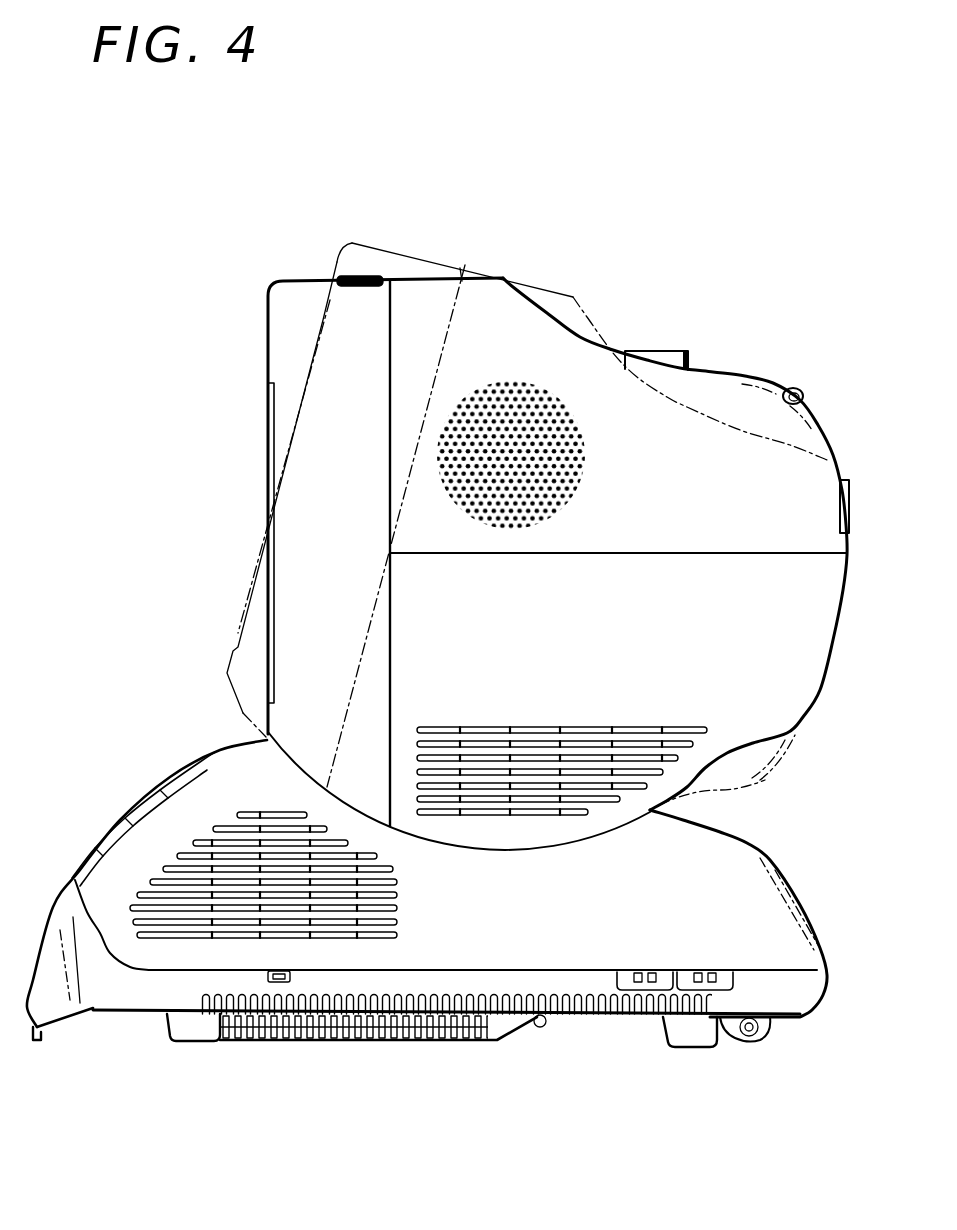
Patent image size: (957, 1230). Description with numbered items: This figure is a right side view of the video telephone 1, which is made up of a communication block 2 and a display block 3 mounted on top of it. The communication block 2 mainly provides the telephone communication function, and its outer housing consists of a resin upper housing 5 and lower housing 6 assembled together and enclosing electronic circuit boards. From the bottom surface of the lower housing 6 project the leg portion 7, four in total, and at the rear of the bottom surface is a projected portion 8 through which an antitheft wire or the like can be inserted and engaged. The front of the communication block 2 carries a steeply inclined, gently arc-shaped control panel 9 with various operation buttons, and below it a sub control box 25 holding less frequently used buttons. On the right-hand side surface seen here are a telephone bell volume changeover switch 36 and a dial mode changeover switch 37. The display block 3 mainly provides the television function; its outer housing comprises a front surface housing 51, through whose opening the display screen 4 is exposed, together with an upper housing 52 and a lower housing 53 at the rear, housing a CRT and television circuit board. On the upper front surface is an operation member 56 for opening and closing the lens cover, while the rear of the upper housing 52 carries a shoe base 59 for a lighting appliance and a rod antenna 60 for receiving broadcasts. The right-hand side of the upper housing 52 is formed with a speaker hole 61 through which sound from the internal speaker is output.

The video telephone 1 is at (502, 232).
The communication block 2 is at (192, 748).
The display block 3 is at (262, 320).
The display screen 4 is at (268, 470).
The upper housing 5 is at (492, 920).
The lower housing 6 is at (548, 983).
The leg portion 7 is at (192, 1028).
The projected portion 8 is at (752, 1032).
The control panel 9 is at (118, 812).
The sub control box 25 is at (43, 1000).
The telephone bell volume changeover switch 36 is at (650, 985).
The dial mode changeover switch 37 is at (705, 988).
The front surface housing 51 is at (315, 548).
The upper housing 52 is at (710, 450).
The lower housing 53 is at (700, 642).
The operation member 56 is at (352, 276).
The shoe base 59 is at (665, 357).
The rod antenna 60 is at (790, 392).
The speaker hole 61 is at (543, 385).